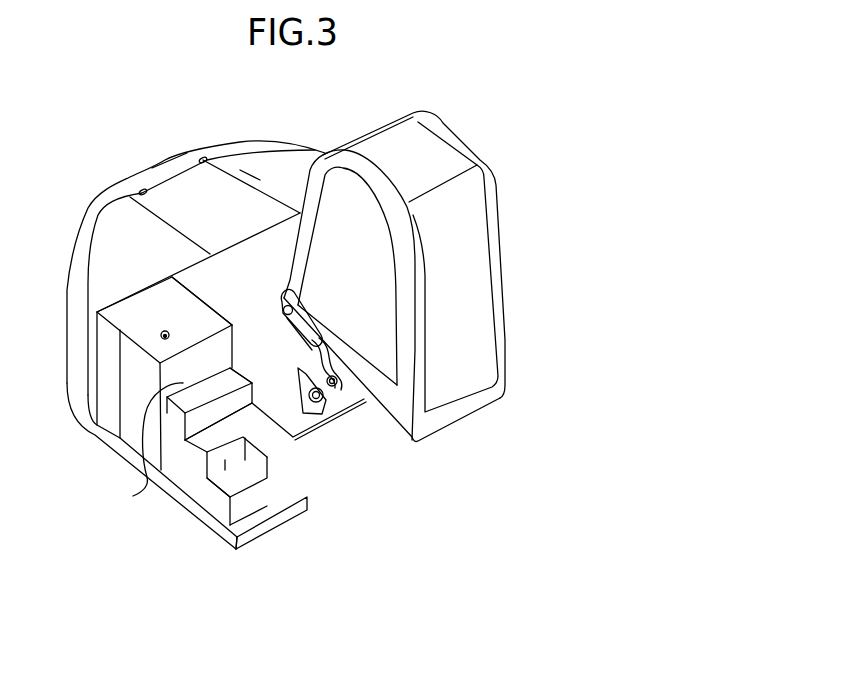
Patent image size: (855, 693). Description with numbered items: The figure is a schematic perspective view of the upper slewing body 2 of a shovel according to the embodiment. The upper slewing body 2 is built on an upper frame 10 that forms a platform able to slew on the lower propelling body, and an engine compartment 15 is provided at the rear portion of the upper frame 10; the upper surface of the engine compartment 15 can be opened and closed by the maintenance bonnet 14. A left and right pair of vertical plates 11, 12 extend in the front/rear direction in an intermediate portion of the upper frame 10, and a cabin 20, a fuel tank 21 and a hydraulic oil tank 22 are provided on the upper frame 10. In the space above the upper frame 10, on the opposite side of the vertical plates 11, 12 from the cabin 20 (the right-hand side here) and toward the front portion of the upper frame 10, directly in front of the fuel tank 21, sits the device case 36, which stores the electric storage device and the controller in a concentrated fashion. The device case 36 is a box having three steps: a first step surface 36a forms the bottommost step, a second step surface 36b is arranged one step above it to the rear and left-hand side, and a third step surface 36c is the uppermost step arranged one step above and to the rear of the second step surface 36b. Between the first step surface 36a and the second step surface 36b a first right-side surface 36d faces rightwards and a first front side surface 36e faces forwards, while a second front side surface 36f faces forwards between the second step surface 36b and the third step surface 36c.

The upper slewing body 2 is at (249, 142).
The upper frame 10 is at (107, 450).
The vertical plate 11 is at (307, 323).
The vertical plate 12 is at (237, 358).
The maintenance bonnet 14 is at (190, 190).
The engine compartment 15 is at (278, 163).
The cabin 20 is at (470, 145).
The fuel tank 21 is at (203, 297).
The hydraulic oil tank 22 is at (135, 300).
The device case 36 is at (270, 503).
The first step surface 36a is at (225, 472).
The second step surface 36b is at (263, 413).
The third step surface 36c is at (133, 496).
The first right-side surface 36d is at (253, 460).
The first front side surface 36e is at (238, 483).
The second front side surface 36f is at (223, 405).